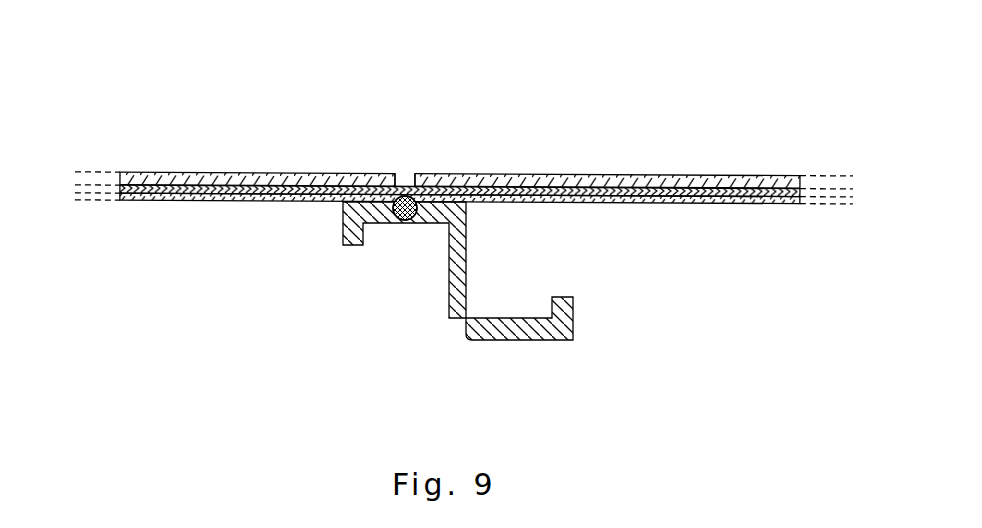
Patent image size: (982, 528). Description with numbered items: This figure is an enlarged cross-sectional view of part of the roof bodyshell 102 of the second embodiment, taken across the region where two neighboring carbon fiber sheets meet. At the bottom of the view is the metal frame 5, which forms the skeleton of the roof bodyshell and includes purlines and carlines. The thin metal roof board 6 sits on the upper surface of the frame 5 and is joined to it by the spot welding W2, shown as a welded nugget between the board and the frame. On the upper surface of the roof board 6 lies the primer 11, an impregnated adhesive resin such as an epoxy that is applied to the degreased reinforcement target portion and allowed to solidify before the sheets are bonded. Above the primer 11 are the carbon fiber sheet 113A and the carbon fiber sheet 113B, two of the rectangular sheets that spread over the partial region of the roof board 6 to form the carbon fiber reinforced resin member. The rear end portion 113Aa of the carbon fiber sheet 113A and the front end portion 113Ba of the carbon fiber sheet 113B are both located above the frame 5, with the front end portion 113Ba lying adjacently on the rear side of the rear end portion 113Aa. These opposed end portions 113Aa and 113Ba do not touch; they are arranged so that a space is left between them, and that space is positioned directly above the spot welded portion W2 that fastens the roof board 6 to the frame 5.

The roof bodyshell 102 is at (179, 108).
The primer 11 is at (603, 183).
The carbon fiber sheet 113A is at (265, 172).
The rear end portion of the carbon fiber sheet 113Aa is at (402, 175).
The carbon fiber sheet 113B is at (695, 177).
The front end portion of the carbon fiber sheet 113Ba is at (412, 175).
The roof board 6 is at (665, 204).
The frame 5 is at (447, 313).
The spot welding W2 is at (398, 222).